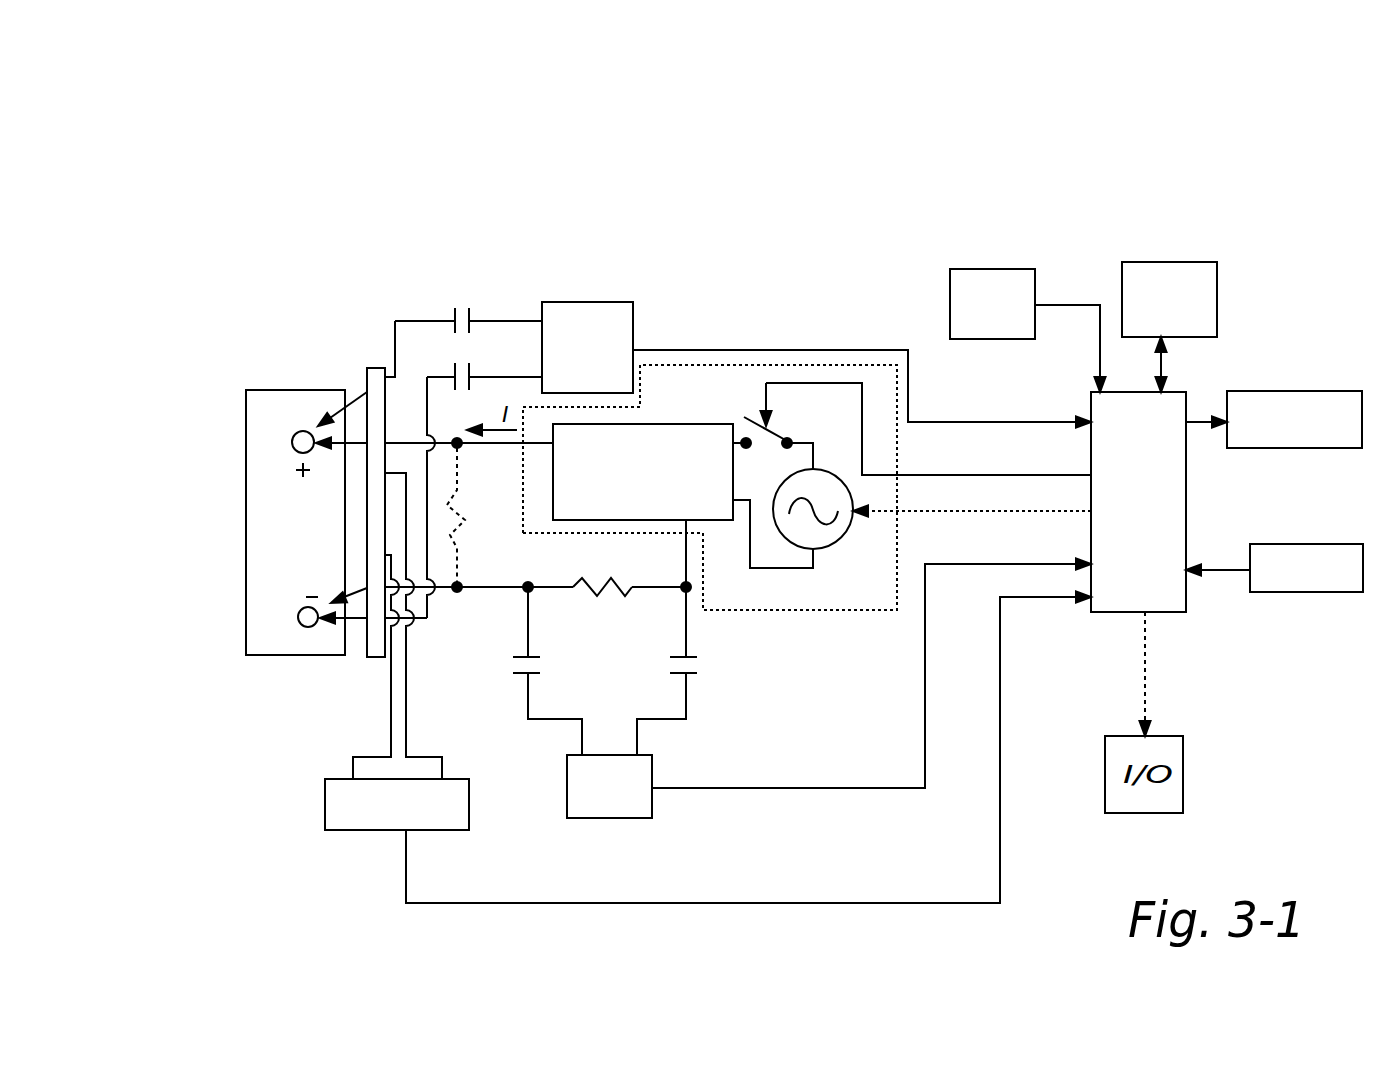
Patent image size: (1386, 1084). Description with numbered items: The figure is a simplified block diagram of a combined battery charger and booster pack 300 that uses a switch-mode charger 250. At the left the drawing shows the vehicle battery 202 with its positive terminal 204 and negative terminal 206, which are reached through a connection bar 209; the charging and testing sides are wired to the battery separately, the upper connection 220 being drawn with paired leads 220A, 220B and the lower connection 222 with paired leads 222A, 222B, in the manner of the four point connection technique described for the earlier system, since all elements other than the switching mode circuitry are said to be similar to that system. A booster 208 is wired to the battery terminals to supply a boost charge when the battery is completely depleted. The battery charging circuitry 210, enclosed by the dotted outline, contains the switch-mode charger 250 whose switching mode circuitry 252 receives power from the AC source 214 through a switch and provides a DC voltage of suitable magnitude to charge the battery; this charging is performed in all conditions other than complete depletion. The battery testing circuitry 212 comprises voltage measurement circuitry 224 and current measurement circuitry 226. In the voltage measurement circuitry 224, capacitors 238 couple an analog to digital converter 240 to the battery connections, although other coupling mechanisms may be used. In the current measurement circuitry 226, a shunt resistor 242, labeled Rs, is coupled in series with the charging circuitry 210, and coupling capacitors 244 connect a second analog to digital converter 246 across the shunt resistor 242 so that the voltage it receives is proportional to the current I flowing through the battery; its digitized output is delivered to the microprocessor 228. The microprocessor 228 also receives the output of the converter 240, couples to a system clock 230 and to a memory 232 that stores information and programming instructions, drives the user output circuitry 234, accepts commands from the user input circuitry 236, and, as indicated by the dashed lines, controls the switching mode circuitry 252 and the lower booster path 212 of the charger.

The combined battery charger and booster pack 300 is at (1172, 135).
The battery / power source 202 is at (246, 534).
The positive terminal 204 is at (293, 437).
The negative terminal 206 is at (298, 611).
The booster 208 is at (345, 830).
The connector bar 209 is at (375, 368).
The battery charging circuitry 210 is at (847, 637).
The battery testing circuitry 212 is at (805, 863).
The AC source 214 is at (840, 548).
The first terminal connection 220 is at (334, 376).
The first terminal pin 220A is at (322, 422).
The second terminal pin 220B is at (348, 448).
The second terminal connection 222 is at (350, 665).
The third terminal pin 222A is at (332, 622).
The fourth terminal pin 222B is at (335, 596).
The voltage measurement circuitry 224 is at (524, 262).
The current measurement circuitry 226 is at (516, 816).
The microprocessor 228 is at (1168, 612).
The system clock 230 is at (970, 269).
The memory 232 is at (1160, 262).
The user output circuitry 234 is at (1255, 391).
The user input circuitry 236 is at (1268, 592).
The capacitors 238 is at (471, 328).
The analog to digital converter 240 is at (605, 302).
The shunt resistor 242 is at (612, 596).
The coupling capacitors 244 is at (540, 676).
The analog to digital converter 246 is at (652, 803).
The switch-mode charger 250 is at (726, 328).
The switching mode circuitry 252 is at (658, 424).